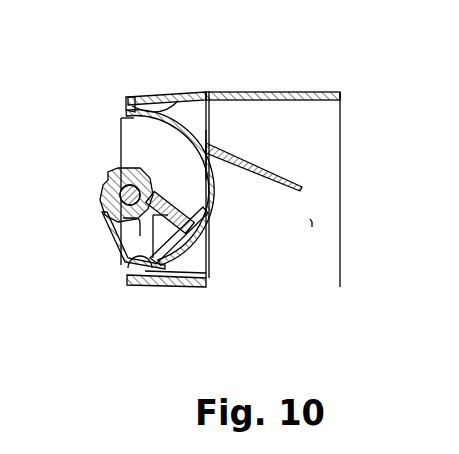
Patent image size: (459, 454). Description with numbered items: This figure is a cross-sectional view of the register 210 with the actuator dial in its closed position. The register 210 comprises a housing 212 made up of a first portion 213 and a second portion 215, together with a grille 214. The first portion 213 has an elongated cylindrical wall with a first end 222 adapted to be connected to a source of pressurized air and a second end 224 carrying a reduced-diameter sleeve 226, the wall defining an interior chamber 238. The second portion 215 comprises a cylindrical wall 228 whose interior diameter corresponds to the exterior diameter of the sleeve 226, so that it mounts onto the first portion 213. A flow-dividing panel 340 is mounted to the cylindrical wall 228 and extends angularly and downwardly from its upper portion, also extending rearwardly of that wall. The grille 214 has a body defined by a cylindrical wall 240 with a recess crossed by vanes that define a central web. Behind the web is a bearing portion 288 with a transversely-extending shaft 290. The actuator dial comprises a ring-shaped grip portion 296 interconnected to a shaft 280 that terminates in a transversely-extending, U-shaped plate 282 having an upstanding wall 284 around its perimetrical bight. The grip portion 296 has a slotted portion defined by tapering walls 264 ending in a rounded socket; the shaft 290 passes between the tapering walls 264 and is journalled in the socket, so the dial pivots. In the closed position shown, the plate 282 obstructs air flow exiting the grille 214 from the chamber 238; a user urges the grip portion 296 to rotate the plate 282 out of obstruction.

The register 210 is at (304, 17).
The housing 212 is at (339, 74).
The first portion 213 is at (278, 91).
The grille 214 is at (112, 261).
The second portion 215 is at (165, 91).
The first end 222 is at (341, 94).
The second end 224 is at (211, 102).
The reduced-diameter sleeve 226 is at (127, 104).
The cylindrical wall 228 is at (207, 99).
The interior chamber 238 is at (311, 220).
The cylindrical wall 240 is at (213, 183).
The tapering walls 264 is at (112, 235).
The shaft 280 is at (173, 205).
The plate 282 is at (190, 268).
The upstanding wall 284 is at (131, 283).
The bearing portion 288 is at (118, 198).
The shaft 290 is at (132, 183).
The grip portion 296 is at (152, 192).
The flow-dividing panel 340 is at (284, 173).